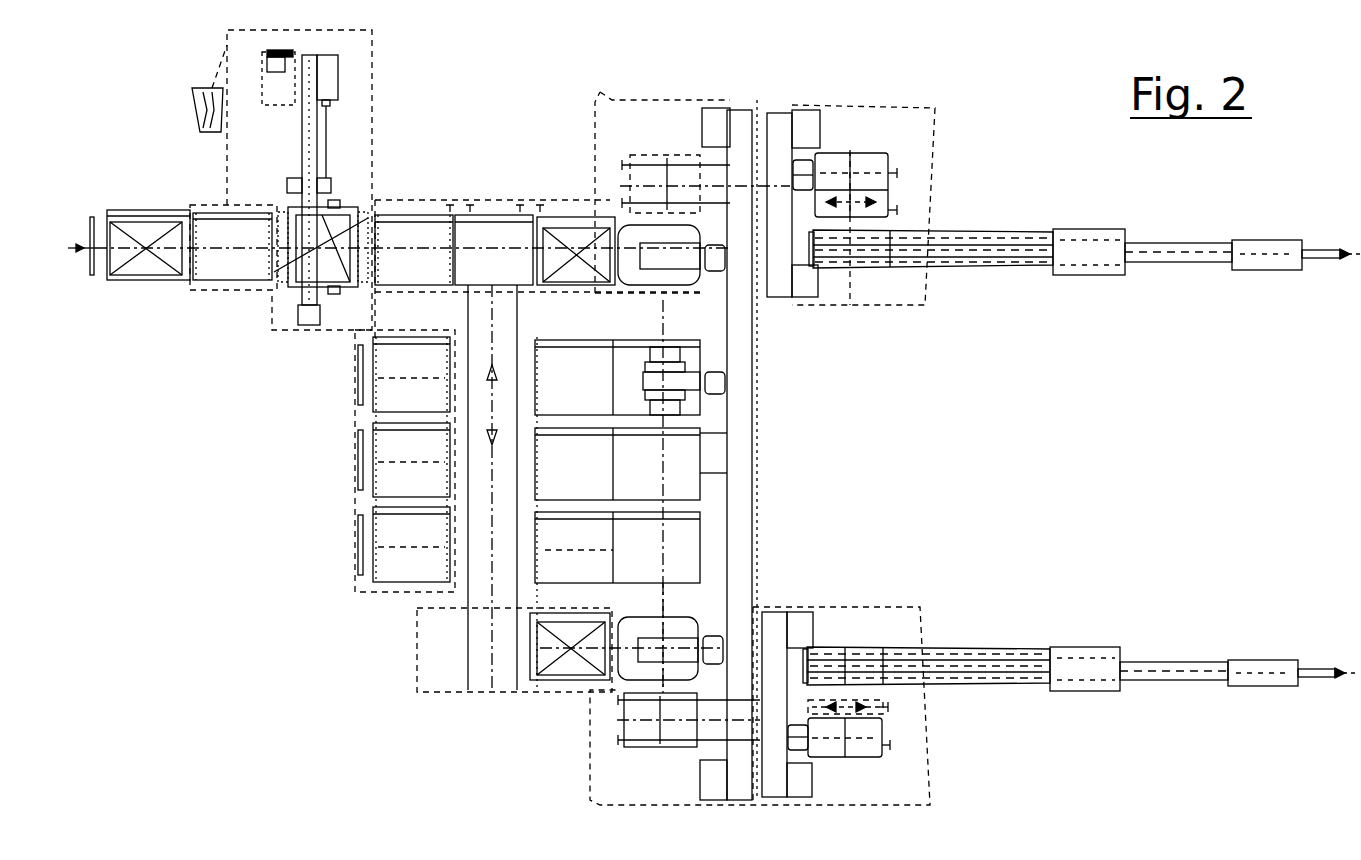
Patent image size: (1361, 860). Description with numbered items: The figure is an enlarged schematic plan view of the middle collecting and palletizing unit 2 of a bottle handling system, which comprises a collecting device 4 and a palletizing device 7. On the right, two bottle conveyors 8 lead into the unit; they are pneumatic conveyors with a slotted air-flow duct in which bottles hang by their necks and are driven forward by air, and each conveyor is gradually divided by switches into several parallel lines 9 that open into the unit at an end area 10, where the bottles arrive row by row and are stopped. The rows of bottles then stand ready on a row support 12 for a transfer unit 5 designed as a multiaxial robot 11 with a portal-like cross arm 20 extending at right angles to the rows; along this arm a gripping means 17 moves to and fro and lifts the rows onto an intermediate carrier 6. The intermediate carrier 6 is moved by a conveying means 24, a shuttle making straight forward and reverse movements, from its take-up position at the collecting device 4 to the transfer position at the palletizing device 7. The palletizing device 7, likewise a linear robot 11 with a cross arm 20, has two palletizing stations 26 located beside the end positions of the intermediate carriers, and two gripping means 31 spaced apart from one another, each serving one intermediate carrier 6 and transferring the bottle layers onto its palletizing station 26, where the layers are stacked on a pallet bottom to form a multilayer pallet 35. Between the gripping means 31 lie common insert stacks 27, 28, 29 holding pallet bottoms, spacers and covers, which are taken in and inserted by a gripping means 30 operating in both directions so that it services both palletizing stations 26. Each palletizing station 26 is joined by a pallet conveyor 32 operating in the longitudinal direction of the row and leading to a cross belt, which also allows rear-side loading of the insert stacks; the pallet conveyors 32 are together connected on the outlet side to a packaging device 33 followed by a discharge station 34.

The collecting and palletizing unit 2 is at (256, 606).
The collecting device 4 is at (1084, 266).
The transfer unit 5 is at (808, 165).
The intermediate carrier 6 is at (748, 469).
The palletizing device 7 is at (378, 613).
The bottle conveyor 8 is at (1203, 262).
The line 9 is at (1018, 238).
The end area 10 is at (882, 635).
The robot 11 is at (820, 410).
The row support 12 is at (860, 268).
The gripping means 17 is at (873, 160).
The cross arm 20 is at (778, 128).
The conveying means 24 is at (712, 112).
The palletizing station 26 is at (606, 208).
The insert stack 27 is at (686, 403).
The insert stack 28 is at (700, 456).
The insert stack 29 is at (688, 546).
The gripping means 30 is at (702, 375).
The gripping means 31 is at (600, 670).
The pallet conveyor 32 is at (477, 215).
The packaging device 33 is at (317, 132).
The discharge station 34 is at (142, 210).
The pallet 35 is at (146, 265).